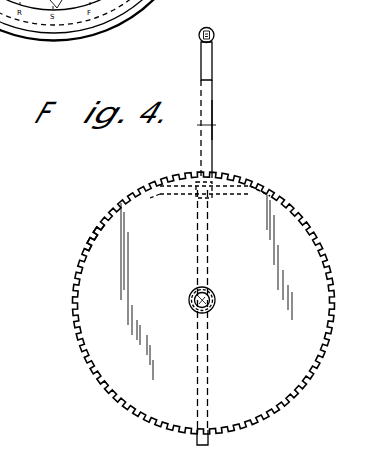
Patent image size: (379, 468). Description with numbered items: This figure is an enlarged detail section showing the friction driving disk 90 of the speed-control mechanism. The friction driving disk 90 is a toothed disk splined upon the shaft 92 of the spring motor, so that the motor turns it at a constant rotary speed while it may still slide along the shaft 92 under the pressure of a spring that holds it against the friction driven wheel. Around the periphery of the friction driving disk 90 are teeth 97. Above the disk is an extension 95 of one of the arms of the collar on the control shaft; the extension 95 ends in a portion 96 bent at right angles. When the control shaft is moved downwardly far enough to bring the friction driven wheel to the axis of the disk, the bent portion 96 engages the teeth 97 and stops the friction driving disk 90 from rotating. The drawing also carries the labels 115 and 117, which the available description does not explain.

The friction driving disk 90 is at (204, 308).
The shaft 92 is at (215, 300).
The extension 95 is at (218, 57).
The portion 96 is at (212, 29).
The teeth 97 is at (96, 236).
The shaft portion 115 is at (258, 120).
The keyway 117 is at (276, 198).